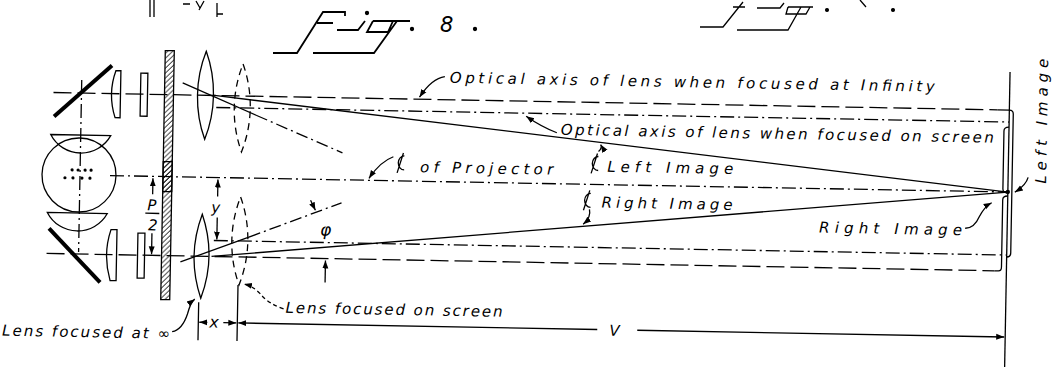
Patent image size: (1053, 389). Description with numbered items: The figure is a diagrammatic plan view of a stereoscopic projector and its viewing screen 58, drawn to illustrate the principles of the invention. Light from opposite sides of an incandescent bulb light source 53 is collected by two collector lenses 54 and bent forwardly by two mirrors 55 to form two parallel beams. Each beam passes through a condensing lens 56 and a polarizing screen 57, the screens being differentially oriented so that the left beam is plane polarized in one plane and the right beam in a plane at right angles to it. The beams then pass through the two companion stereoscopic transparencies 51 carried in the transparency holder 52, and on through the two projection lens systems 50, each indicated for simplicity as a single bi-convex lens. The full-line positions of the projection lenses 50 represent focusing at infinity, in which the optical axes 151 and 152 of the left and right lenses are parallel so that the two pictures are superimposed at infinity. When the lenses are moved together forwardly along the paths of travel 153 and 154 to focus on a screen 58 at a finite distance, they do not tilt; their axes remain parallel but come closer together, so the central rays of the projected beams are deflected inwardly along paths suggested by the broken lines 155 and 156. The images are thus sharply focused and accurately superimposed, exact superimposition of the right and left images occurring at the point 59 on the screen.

The projection lens systems 50 is at (201, 127).
The stereoscopic transparencies 51 is at (165, 108).
The transparency holder 52 is at (171, 158).
The light source 53 is at (42, 176).
The collector lenses 54 is at (53, 133).
The mirrors 55 is at (82, 92).
The condensing lenses 56 is at (115, 70).
The polarizing screens 57 is at (145, 72).
The screen 58 is at (1005, 276).
The point of exact superimposition 59 is at (1006, 174).
The optical axis of left lens 151 is at (732, 93).
The optical axis of right lens 152 is at (698, 255).
The path of travel of left lens 153 is at (303, 131).
The path of travel of right lens 154 is at (289, 203).
The central ray path of left beam 155 is at (773, 150).
The central ray path of right beam 156 is at (681, 208).